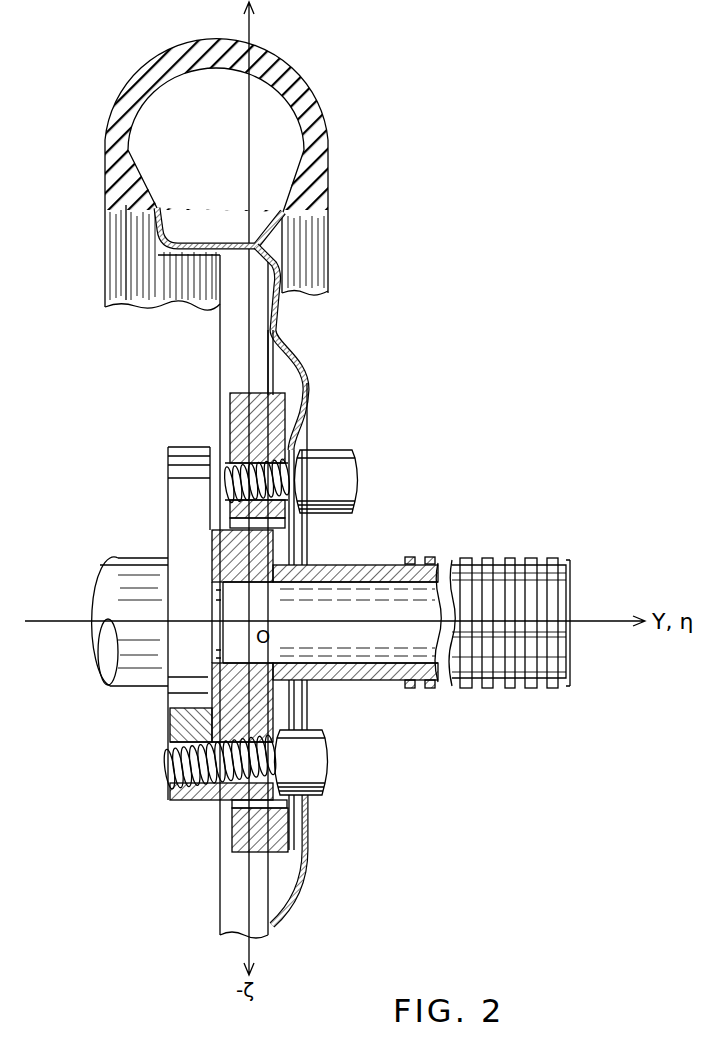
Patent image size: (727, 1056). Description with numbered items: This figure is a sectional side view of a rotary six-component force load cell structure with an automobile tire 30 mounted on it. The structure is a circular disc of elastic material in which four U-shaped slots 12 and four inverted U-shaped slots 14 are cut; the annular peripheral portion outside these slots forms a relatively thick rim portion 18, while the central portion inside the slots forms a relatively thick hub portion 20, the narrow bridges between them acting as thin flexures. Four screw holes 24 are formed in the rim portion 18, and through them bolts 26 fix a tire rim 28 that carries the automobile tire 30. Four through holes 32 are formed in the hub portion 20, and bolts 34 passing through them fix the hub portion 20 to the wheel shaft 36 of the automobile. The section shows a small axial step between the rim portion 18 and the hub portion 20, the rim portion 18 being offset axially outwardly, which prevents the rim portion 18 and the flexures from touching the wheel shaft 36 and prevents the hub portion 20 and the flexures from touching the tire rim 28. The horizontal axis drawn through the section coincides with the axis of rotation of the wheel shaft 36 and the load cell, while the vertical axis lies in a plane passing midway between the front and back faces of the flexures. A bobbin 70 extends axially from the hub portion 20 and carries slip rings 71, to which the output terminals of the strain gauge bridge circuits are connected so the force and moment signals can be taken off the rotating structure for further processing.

The automobile tire 30 is at (323, 92).
The tire rim 28 is at (302, 355).
The rim portion 18 is at (233, 398).
The screw holes 24 is at (247, 447).
The bolts 26 is at (357, 458).
The wheel shaft 36 is at (130, 556).
The U-shaped slots 12 is at (270, 528).
The hub portion 20 is at (230, 707).
The bobbin 70 is at (380, 682).
The slip rings 71 is at (467, 688).
The bolts 34 is at (327, 770).
The inverted U-shaped slots 14 is at (288, 808).
The through holes 32 is at (215, 797).